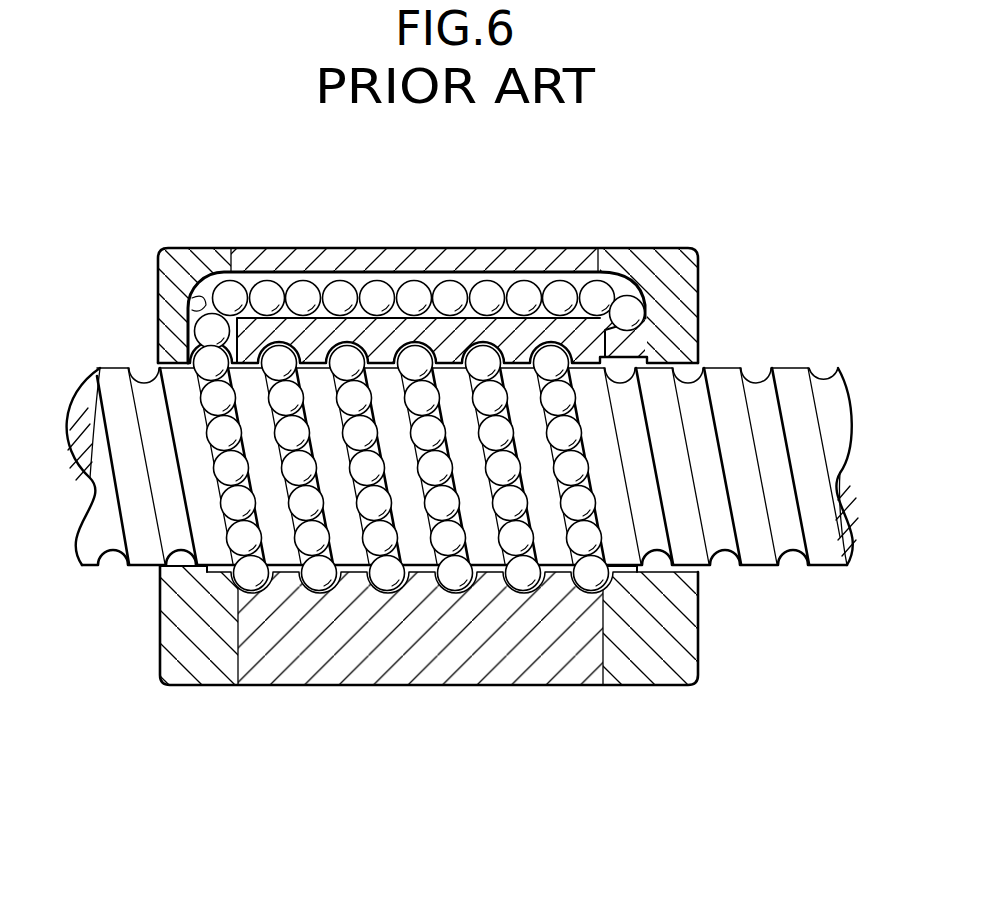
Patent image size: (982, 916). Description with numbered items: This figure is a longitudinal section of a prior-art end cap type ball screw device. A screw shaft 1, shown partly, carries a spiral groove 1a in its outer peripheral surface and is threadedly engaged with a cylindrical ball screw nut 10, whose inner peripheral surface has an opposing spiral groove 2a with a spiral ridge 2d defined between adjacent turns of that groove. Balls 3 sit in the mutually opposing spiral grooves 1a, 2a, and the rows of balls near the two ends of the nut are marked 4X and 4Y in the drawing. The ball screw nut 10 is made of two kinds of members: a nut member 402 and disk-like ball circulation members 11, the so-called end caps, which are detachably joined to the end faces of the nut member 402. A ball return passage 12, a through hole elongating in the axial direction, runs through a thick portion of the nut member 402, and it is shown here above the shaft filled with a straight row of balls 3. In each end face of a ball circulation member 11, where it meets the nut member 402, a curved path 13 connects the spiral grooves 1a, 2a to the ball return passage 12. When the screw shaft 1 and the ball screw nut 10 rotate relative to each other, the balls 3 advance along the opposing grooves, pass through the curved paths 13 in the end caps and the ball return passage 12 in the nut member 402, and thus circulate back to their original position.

The screw shaft 1 is at (767, 350).
The spiral groove 1a is at (818, 377).
The spiral groove 2a is at (525, 577).
The spiral ridge 2d is at (485, 575).
The balls 3 is at (421, 484).
The end ball row 4X is at (605, 580).
The end ball row 4Y is at (230, 587).
The ball screw nut 10 is at (368, 705).
The ball circulation member 11 is at (158, 330).
The ball return passage 12 is at (293, 272).
The curved path 13 is at (192, 295).
The nut member 402 is at (517, 247).